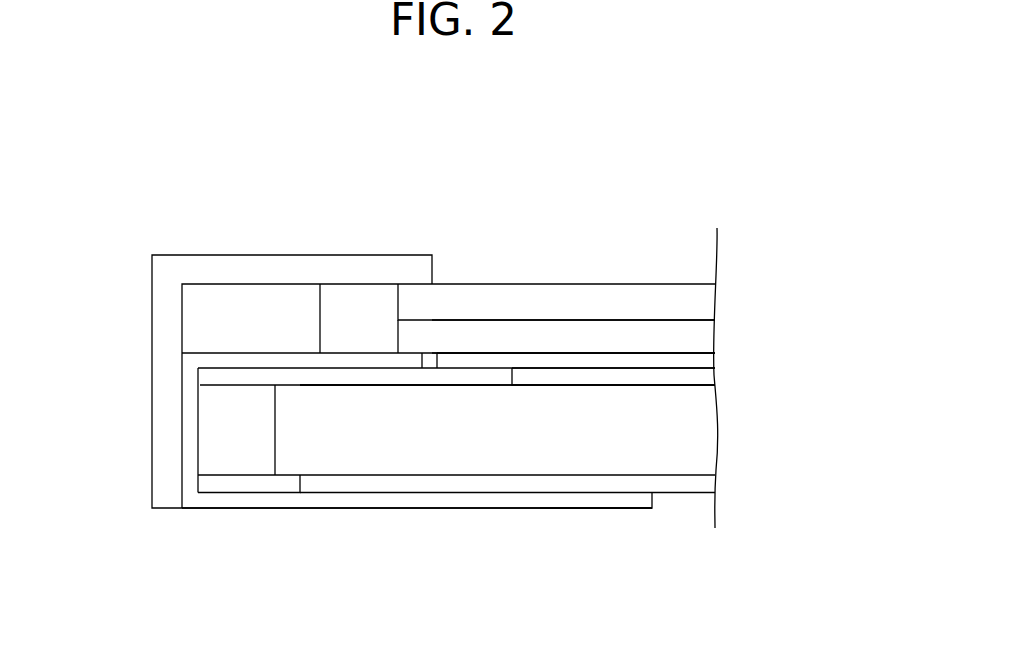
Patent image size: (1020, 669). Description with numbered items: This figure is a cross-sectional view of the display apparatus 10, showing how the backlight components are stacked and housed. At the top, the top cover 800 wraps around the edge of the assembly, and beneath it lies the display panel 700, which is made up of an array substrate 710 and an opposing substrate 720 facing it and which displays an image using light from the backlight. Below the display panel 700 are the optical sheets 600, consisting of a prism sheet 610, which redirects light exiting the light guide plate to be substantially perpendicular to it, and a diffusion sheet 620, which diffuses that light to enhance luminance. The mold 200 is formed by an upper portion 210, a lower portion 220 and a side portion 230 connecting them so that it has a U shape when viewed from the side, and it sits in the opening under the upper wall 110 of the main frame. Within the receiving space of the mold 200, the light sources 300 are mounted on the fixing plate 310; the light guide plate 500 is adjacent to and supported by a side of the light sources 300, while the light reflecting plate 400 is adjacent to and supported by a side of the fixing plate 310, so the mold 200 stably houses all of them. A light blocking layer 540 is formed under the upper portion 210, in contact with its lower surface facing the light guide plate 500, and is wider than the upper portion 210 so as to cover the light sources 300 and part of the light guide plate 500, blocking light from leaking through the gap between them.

The display apparatus 10 is at (405, 149).
The upper wall 110 is at (188, 318).
The mold 200 is at (502, 505).
The upper portion 210 is at (197, 357).
The lower portion 220 is at (605, 505).
The side portion 230 is at (188, 468).
The light sources 300 is at (222, 460).
The fixing plate 310 is at (275, 488).
The light reflecting plate 400 is at (708, 482).
The light guide plate 500 is at (709, 422).
The light blocking layer 540 is at (377, 378).
The optical sheets 600 is at (790, 330).
The prism sheet 610 is at (713, 372).
The diffusion sheet 620 is at (713, 358).
The display panel 700 is at (627, 219).
The array substrate 710 is at (607, 337).
The opposing substrate 720 is at (547, 300).
The top cover 800 is at (160, 427).